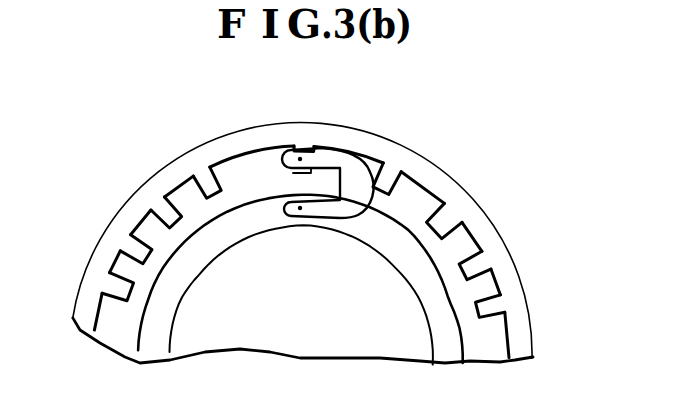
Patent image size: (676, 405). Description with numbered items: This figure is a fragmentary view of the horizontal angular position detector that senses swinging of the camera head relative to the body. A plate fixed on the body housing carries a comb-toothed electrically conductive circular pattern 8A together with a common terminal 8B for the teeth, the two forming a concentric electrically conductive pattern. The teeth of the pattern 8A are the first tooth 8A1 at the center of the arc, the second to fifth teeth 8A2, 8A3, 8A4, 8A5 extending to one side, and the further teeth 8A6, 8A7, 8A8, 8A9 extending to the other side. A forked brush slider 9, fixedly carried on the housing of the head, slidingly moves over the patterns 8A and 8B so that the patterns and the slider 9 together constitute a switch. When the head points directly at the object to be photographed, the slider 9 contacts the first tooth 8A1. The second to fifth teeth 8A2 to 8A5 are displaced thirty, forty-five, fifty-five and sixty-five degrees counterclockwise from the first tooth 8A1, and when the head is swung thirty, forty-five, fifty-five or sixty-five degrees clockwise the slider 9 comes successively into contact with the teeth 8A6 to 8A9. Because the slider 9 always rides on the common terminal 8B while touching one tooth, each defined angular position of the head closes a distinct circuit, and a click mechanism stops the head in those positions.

The comb-toothed electrically conductive circular pattern 8A is at (224, 144).
The first tooth 8A1 is at (301, 141).
The second tooth 8A2 is at (200, 170).
The third tooth 8A3 is at (162, 206).
The fourth tooth 8A4 is at (137, 244).
The fifth tooth 8A5 is at (115, 287).
The sixth tooth 8A6 is at (394, 172).
The seventh tooth 8A7 is at (451, 217).
The eighth tooth 8A8 is at (482, 260).
The ninth tooth 8A9 is at (496, 302).
The common terminal 8B is at (174, 320).
The forked brush slider 9 is at (355, 168).